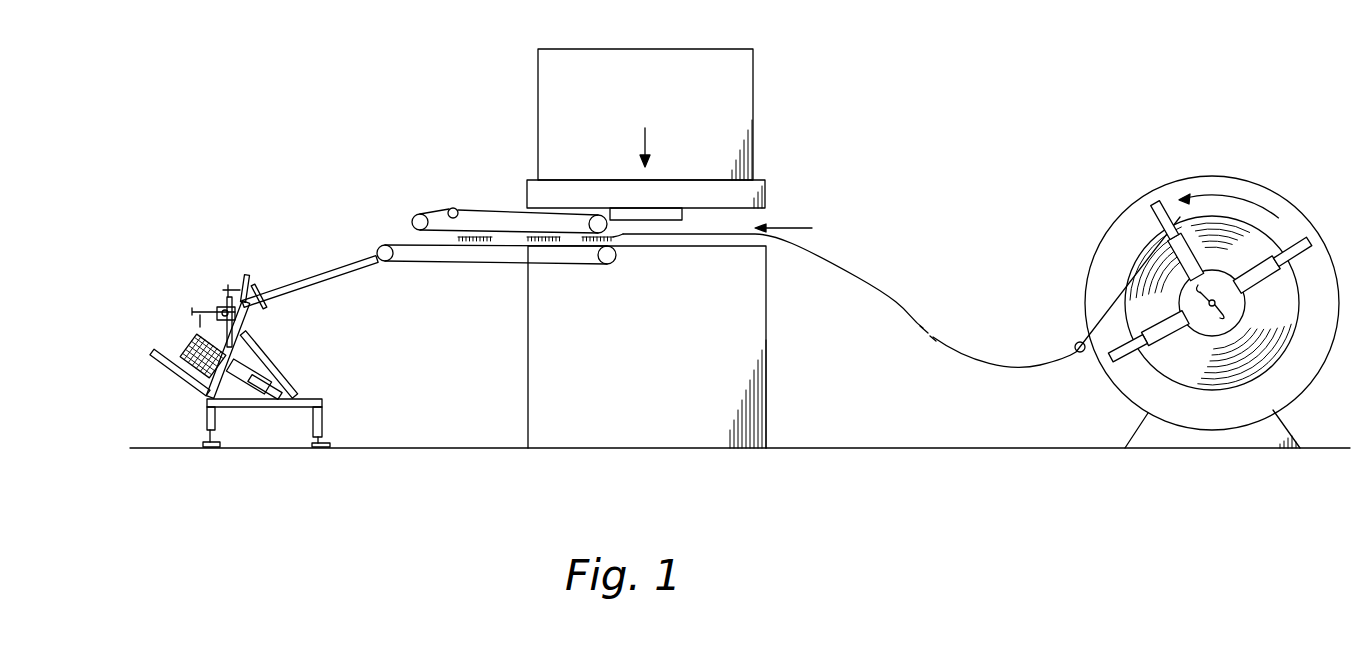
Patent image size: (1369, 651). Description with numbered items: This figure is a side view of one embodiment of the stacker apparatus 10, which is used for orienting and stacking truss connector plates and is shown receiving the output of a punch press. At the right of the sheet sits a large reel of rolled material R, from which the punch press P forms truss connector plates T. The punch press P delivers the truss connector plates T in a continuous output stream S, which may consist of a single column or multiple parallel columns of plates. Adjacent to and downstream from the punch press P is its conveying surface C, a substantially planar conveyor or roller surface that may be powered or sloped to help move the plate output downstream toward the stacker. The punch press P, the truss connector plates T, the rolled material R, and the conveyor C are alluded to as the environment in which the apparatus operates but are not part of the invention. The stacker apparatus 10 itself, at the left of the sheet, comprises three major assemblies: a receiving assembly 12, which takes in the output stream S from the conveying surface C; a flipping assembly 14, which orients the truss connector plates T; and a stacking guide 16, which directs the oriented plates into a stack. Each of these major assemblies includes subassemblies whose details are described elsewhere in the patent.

The stacker apparatus 10 is at (385, 160).
The receiving assembly 12 is at (345, 222).
The flipping assembly 14 is at (223, 260).
The stacking guide 16 is at (130, 346).
The punch press P is at (646, 134).
The conveying surface C is at (500, 266).
The output stream S is at (413, 237).
The truss connector plates T is at (617, 237).
The rolled material R is at (1268, 250).